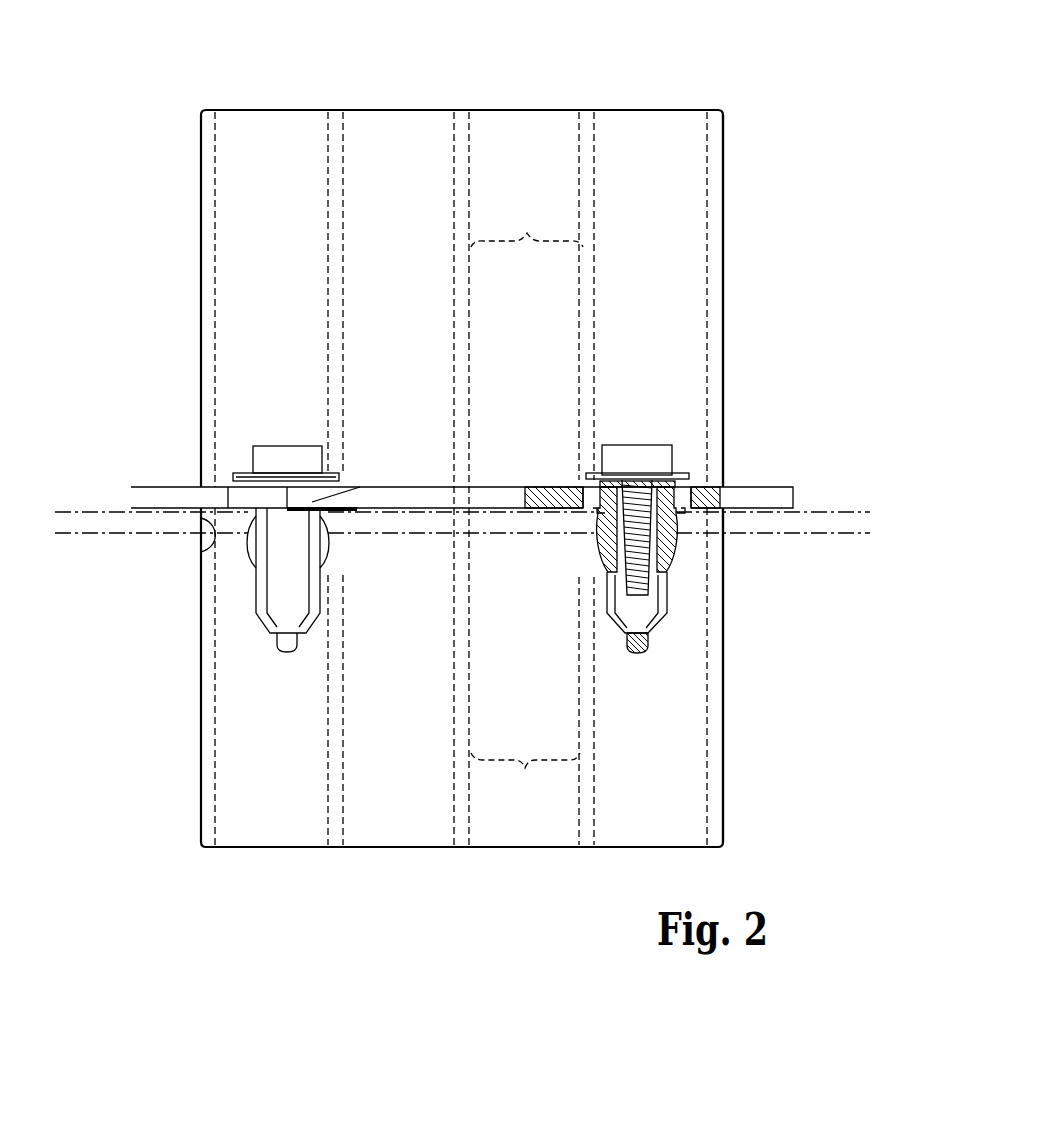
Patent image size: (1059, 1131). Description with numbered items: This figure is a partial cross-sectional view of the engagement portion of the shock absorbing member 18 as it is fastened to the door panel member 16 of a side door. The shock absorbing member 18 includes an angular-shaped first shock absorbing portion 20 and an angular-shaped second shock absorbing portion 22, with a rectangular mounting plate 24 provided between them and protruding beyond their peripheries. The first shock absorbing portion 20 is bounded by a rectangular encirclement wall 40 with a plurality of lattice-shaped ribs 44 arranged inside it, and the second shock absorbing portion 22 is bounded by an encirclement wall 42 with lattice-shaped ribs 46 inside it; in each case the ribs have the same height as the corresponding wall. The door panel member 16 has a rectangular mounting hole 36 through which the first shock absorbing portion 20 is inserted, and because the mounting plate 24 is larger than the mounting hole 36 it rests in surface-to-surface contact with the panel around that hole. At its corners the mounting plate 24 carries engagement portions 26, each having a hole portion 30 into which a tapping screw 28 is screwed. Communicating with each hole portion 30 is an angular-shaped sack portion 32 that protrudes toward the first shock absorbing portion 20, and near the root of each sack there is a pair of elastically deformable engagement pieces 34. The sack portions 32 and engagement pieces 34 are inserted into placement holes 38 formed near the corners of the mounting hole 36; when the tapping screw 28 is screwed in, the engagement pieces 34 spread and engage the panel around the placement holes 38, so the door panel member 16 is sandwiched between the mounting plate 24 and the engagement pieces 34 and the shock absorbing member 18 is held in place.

The door panel member 16 is at (833, 525).
The shock absorbing member 18 is at (760, 69).
The first shock absorbing portion 20 is at (729, 751).
The second shock absorbing portion 22 is at (731, 228).
The mounting plate 24 is at (779, 488).
The engagement portion 26 is at (238, 464).
The tapping screw 28 is at (290, 445).
The hole portion 30 is at (635, 497).
The angular-shaped sack portion 32 is at (295, 599).
The engagement piece 34 is at (252, 548).
The mounting hole 36 is at (212, 546).
The placement hole 38 is at (313, 502).
The encirclement wall 40 is at (715, 715).
The encirclement wall 42 is at (719, 268).
The ribs 44 is at (525, 778).
The ribs 46 is at (527, 225).